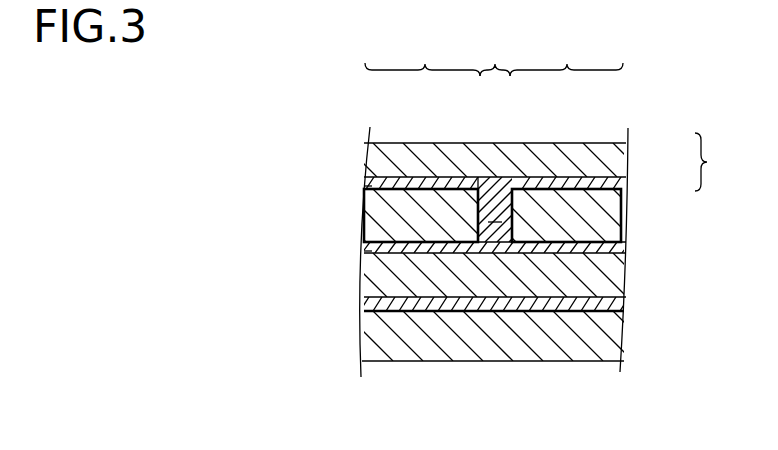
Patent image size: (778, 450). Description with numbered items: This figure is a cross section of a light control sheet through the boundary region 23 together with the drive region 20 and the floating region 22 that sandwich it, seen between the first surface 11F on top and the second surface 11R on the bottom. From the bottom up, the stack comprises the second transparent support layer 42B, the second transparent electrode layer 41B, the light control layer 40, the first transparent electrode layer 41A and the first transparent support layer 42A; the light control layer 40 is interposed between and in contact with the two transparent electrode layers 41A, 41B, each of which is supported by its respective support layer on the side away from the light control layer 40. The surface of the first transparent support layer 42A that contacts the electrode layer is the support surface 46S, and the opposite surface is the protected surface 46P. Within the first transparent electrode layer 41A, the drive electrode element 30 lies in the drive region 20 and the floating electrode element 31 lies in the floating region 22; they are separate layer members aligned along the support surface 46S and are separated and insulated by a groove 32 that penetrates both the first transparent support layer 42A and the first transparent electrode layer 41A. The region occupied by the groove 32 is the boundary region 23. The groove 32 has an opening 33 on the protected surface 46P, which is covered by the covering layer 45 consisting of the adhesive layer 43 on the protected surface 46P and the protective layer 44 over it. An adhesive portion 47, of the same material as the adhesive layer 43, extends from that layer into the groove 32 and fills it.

The first surface 11F is at (410, 142).
The second surface 11R is at (394, 362).
The drive region 20 is at (566, 54).
The floating region 22 is at (422, 54).
The boundary region 23 is at (493, 54).
The drive electrode element 30 is at (570, 247).
The floating electrode element 31 is at (418, 247).
The groove 32 is at (500, 205).
The opening 33 is at (483, 170).
The light control layer 40 is at (620, 299).
The first transparent electrode layer 41A is at (620, 245).
The second transparent electrode layer 41B is at (620, 312).
The first transparent support layer 42A is at (620, 222).
The second transparent support layer 42B is at (620, 355).
The adhesive layer 43 is at (620, 183).
The protective layer 44 is at (620, 155).
The covering layer 45 is at (719, 162).
The protected surface 46P is at (386, 186).
The support surface 46S is at (366, 251).
The adhesive portion 47 is at (495, 227).